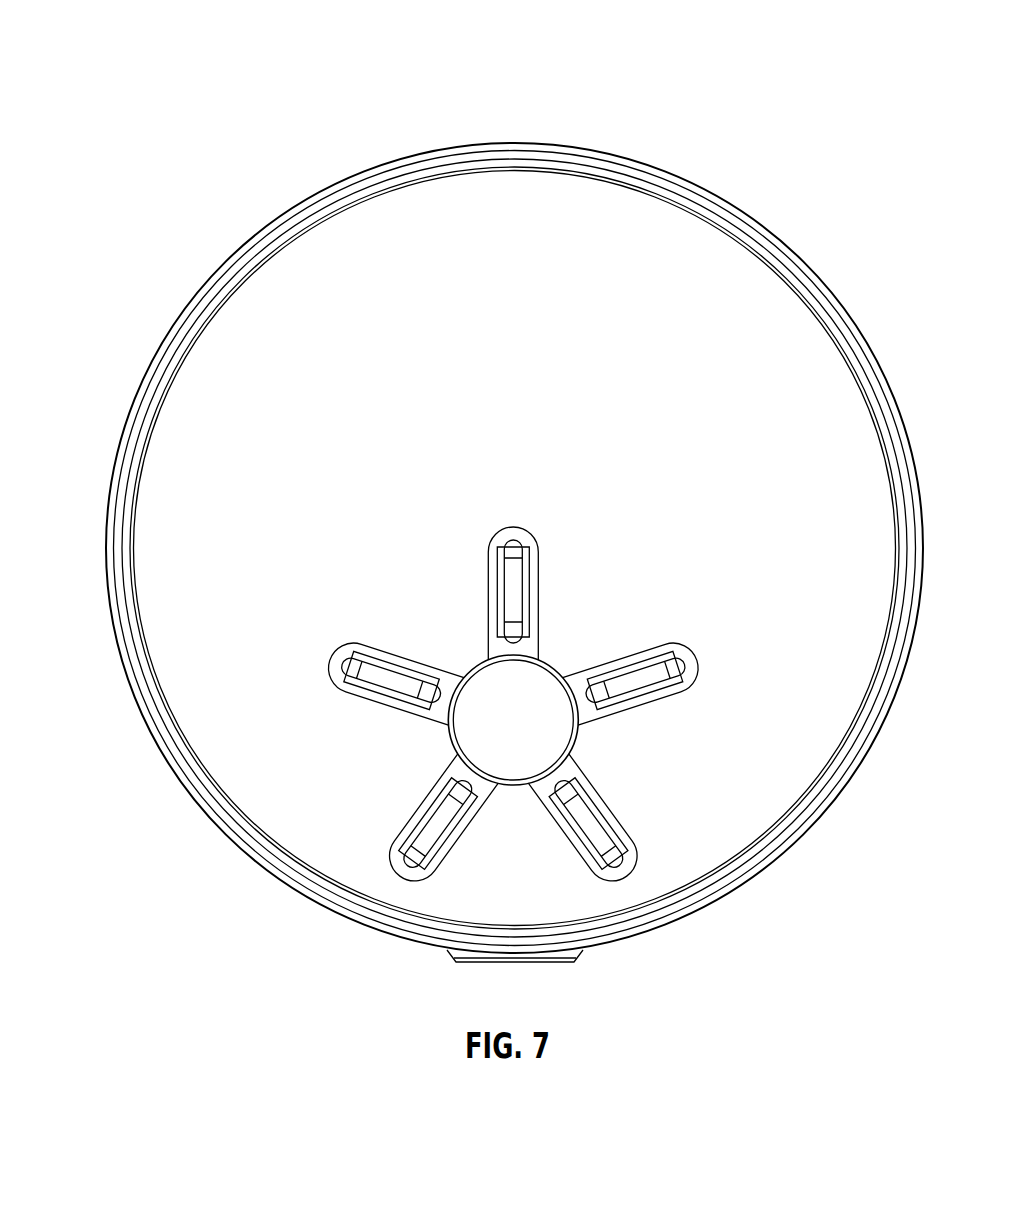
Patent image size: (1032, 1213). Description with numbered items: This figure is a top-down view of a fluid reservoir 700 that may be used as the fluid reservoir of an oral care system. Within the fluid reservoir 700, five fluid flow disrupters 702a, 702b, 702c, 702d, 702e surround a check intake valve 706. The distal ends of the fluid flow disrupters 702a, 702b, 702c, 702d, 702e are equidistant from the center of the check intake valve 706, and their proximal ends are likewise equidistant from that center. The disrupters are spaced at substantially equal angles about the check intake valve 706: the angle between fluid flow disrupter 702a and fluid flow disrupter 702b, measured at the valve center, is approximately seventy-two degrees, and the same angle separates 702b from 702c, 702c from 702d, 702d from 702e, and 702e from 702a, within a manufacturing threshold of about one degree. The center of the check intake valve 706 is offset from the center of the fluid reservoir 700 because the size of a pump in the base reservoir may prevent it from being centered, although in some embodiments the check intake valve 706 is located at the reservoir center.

The fluid reservoir 700 is at (118, 74).
The fluid flow disrupter 702a is at (522, 527).
The fluid flow disrupter 702b is at (679, 641).
The fluid flow disrupter 702c is at (612, 808).
The fluid flow disrupter 702d is at (418, 805).
The fluid flow disrupter 702e is at (343, 643).
The check intake valve 706 is at (545, 658).